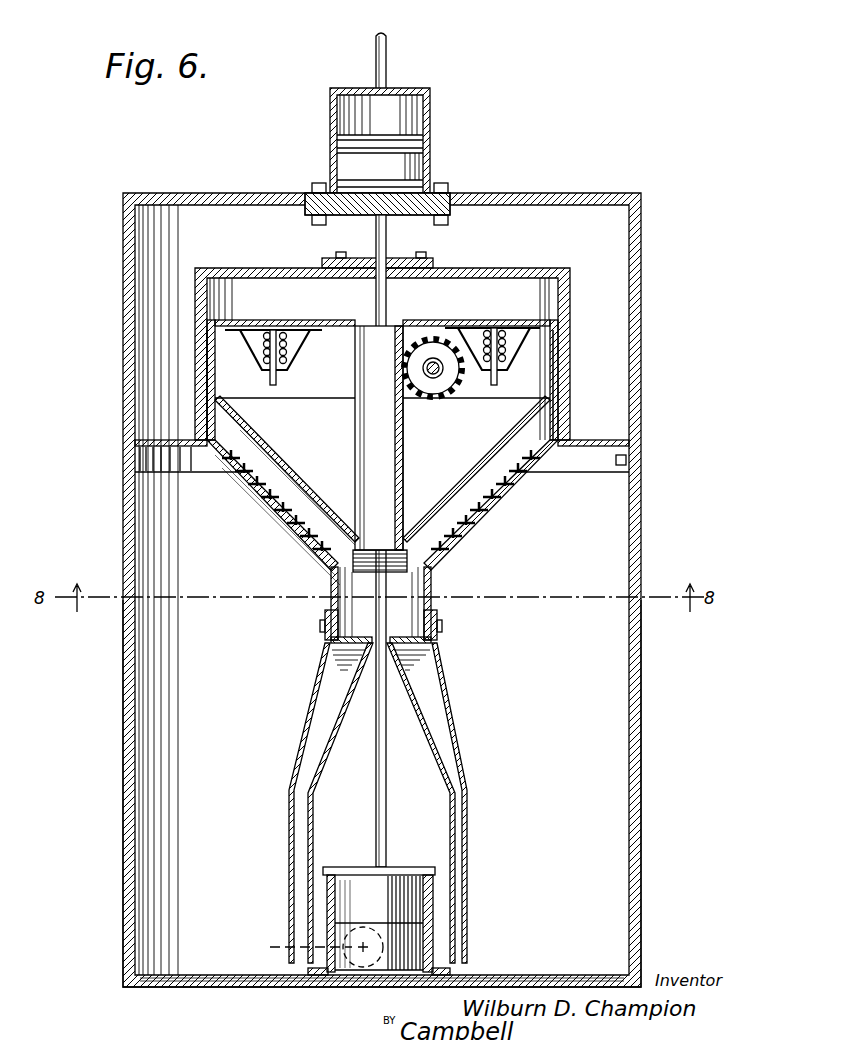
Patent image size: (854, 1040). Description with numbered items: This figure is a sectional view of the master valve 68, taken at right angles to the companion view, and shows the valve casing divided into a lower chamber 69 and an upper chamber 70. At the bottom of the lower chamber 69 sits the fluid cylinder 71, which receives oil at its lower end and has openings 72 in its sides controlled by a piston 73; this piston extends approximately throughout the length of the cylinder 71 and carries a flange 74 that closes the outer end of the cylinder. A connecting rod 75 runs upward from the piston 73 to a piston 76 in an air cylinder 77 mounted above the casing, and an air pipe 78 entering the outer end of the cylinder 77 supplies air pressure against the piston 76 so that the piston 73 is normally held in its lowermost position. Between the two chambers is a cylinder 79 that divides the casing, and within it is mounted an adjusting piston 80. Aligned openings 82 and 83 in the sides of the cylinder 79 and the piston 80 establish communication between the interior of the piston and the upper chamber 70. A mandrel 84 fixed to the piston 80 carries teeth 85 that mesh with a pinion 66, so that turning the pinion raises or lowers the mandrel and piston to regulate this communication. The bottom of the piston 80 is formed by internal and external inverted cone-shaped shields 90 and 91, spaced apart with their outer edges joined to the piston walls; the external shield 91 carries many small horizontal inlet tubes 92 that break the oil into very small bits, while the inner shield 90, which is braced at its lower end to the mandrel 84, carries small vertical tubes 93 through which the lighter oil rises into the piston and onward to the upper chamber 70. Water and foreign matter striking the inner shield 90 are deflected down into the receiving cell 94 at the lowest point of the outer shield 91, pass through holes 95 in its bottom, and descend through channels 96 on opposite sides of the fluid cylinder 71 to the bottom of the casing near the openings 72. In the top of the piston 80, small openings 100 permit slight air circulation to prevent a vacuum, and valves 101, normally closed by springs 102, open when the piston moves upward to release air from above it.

The gear 66 is at (445, 392).
The master valve 68 is at (641, 690).
The lower chamber 69 is at (137, 718).
The upper chamber 70 is at (165, 305).
The fluid cylinder 71 is at (434, 890).
The openings 72 is at (268, 940).
The piston 73 is at (356, 886).
The flange 74 is at (400, 868).
The connecting rod 75 is at (387, 778).
The piston 76 is at (400, 152).
The air cylinder 77 is at (430, 112).
The air pipe 78 is at (386, 56).
The cylinder 79 is at (500, 268).
The adjusting piston 80 is at (535, 322).
The openings 82 is at (206, 368).
The openings 83 is at (222, 398).
The mandrel 84 is at (358, 420).
The teeth 85 is at (406, 410).
The internal inverted cone-shaped shield 90 is at (285, 464).
The external inverted cone-shaped shield 91 is at (275, 495).
The inlet tubes 92 is at (305, 526).
The tubes 93 is at (302, 490).
The receiving cell 94 is at (410, 578).
The holes 95 is at (328, 640).
The channels 96 is at (304, 738).
The openings 100 is at (425, 320).
The valves 101 is at (265, 330).
The springs 102 is at (292, 362).